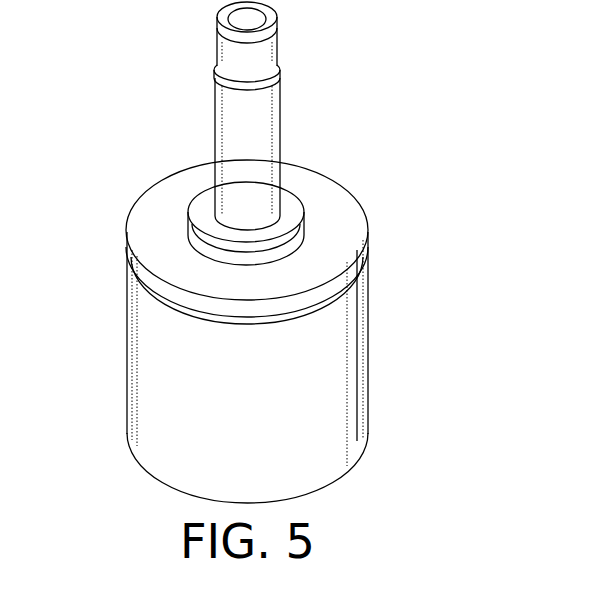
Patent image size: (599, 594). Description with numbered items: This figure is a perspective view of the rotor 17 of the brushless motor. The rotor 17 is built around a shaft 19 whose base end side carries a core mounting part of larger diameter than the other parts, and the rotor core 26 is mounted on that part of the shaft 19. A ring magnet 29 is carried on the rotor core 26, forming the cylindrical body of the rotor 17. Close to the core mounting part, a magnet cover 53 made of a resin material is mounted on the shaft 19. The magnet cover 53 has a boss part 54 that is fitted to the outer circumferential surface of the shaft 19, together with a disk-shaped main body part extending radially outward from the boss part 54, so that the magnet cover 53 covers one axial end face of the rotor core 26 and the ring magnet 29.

The rotor assembly 17 is at (402, 304).
The shaft 19 is at (257, 111).
The magnet cover 53 is at (313, 195).
The boss part 54 is at (205, 208).
The rotor core 26 is at (369, 344).
The ring magnet 29 is at (330, 407).